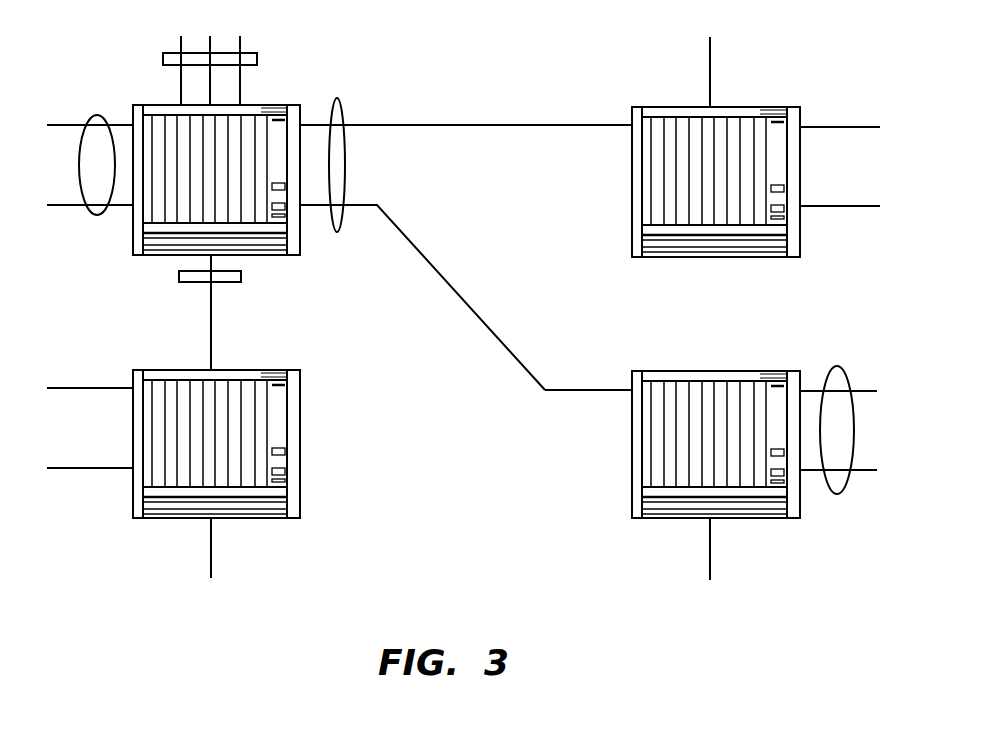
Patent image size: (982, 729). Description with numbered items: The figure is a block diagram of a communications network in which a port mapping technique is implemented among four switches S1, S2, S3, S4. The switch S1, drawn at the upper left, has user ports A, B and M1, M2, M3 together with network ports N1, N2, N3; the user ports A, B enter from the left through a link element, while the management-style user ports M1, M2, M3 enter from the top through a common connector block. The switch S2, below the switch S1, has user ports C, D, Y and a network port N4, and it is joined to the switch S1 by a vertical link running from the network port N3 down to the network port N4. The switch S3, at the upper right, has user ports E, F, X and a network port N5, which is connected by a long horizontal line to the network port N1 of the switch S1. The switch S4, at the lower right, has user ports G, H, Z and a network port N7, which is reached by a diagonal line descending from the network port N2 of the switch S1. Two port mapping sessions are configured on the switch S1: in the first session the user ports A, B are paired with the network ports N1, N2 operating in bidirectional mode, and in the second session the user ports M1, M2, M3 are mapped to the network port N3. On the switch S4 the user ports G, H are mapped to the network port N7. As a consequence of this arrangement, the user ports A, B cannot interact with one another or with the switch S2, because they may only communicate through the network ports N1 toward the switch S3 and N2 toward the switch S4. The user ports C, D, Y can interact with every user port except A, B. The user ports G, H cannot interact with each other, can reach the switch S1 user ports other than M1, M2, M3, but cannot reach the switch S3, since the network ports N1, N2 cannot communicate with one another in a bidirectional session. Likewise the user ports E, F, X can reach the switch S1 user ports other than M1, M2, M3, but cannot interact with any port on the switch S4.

The switch S1 is at (215, 186).
The switch S2 is at (215, 449).
The switch S3 is at (714, 188).
The switch S4 is at (714, 449).
The user port M1 is at (184, 59).
The user port M2 is at (210, 59).
The user port M3 is at (244, 59).
The network port N1 is at (385, 165).
The network port N2 is at (422, 297).
The network port N3 is at (212, 287).
The network port N4 is at (228, 345).
The network port N5 is at (551, 113).
The network port N7 is at (588, 378).
The user port A is at (89, 157).
The user port B is at (89, 220).
The user port C is at (89, 377).
The user port D is at (89, 483).
The user port E is at (840, 115).
The user port F is at (840, 221).
The user port G is at (840, 430).
The user port H is at (840, 485).
The user port X is at (721, 72).
The user port Y is at (223, 548).
The user port Z is at (723, 549).